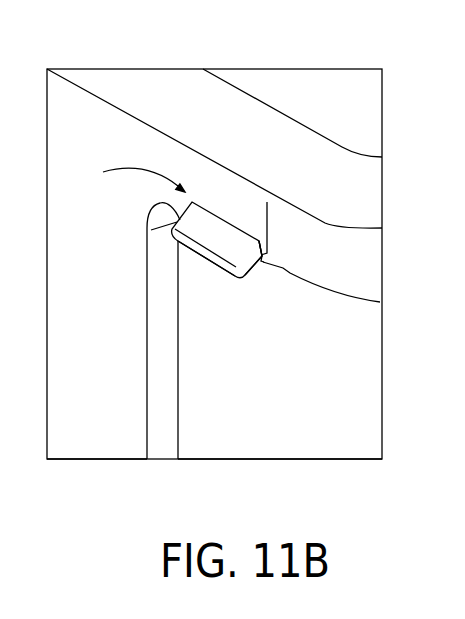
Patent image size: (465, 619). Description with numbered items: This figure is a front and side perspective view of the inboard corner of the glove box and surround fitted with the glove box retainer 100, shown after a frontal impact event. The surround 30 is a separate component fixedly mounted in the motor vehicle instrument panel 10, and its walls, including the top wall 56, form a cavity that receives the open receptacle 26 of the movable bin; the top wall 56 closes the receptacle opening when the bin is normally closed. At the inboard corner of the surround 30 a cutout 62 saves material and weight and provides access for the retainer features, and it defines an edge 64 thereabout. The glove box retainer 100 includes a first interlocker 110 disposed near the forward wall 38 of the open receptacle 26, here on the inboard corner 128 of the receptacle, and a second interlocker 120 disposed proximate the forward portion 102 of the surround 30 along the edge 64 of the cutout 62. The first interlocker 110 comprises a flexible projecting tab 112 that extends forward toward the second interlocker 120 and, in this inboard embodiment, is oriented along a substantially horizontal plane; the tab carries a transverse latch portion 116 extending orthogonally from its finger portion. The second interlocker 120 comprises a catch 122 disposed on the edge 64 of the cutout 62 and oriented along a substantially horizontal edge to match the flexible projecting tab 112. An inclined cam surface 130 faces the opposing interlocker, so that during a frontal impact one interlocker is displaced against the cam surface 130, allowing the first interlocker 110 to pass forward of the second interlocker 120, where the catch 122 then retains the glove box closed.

The motor vehicle instrument panel 10 is at (256, 232).
The open receptacle 26 is at (360, 325).
The surround 30 is at (85, 450).
The forward wall 38 is at (248, 430).
The top wall 56 is at (302, 82).
The cutout 62 is at (160, 452).
The edge 64 is at (168, 423).
The glove box retainer 100 is at (119, 174).
The forward portion 102 is at (239, 193).
The first interlocker 110 is at (222, 268).
The flexible projecting tab 112 is at (275, 272).
The transverse latch portion 116 is at (238, 238).
The second interlocker 120 is at (258, 223).
The catch 122 is at (340, 228).
The inboard corner 128 is at (313, 302).
The inclined cam surface 130 is at (213, 243).